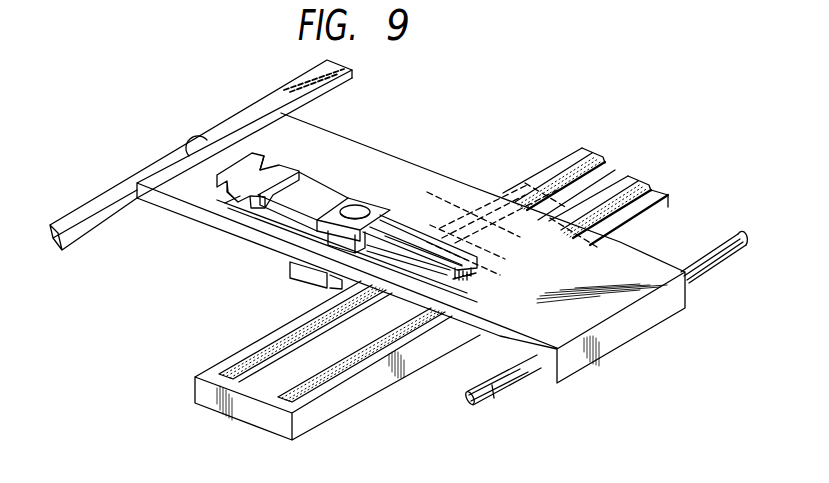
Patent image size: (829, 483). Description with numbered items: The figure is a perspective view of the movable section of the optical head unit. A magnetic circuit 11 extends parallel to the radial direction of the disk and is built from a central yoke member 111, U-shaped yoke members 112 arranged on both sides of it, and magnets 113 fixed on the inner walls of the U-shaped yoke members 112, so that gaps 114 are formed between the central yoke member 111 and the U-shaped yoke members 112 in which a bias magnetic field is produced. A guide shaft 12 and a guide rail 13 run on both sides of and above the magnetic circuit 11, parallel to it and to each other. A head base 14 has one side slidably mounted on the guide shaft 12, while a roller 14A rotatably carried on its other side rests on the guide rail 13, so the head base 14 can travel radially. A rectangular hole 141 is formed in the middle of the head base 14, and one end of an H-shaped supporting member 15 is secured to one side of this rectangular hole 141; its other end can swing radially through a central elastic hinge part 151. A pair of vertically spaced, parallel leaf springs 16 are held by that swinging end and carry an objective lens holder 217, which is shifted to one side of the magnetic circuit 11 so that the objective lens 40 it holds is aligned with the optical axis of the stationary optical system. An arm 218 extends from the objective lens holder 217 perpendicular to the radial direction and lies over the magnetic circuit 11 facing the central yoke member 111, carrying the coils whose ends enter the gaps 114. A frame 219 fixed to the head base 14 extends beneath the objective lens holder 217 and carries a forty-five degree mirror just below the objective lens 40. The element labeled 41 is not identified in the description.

The magnetic circuit 11 is at (368, 404).
The guide shaft 12 is at (476, 403).
The guide rail 13 is at (118, 198).
The head base 14 is at (338, 147).
The roller 14A is at (197, 140).
The supporting member 15 is at (247, 162).
The elastic hinge part 151 is at (265, 164).
The leaf springs 16 is at (317, 188).
The objective lens 40 is at (357, 213).
The slider bar 41 is at (320, 238).
The rectangular hole 141 is at (243, 207).
The objective lens holder 217 is at (380, 212).
The arm 218 is at (410, 223).
The frame 219 is at (300, 274).
The central yoke member 111 is at (625, 168).
The U-shaped yoke members 112 is at (575, 160).
The magnets 113 is at (590, 152).
The gaps 114 is at (610, 165).